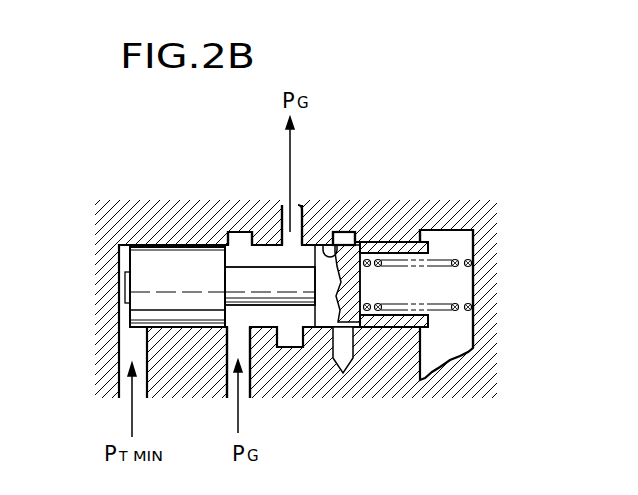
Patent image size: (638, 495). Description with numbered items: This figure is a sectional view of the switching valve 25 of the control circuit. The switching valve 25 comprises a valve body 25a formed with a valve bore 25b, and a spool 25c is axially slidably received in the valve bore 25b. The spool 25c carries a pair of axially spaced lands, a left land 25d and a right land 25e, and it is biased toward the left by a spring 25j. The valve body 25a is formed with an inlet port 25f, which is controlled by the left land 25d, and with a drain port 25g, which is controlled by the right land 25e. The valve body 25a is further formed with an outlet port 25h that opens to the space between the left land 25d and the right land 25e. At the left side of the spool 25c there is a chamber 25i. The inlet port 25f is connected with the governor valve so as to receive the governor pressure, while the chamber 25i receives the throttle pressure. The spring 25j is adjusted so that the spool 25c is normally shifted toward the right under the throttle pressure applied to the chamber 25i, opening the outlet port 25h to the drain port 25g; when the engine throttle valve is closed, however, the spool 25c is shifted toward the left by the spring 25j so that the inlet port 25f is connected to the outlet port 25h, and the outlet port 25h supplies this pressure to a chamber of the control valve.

The switching valve 25 is at (462, 163).
The valve body 25a is at (262, 240).
The valve bore 25b is at (347, 232).
The spool 25c is at (275, 290).
The left land 25d is at (145, 260).
The right land 25e is at (350, 300).
The inlet port 25f is at (237, 335).
The drain port 25g is at (343, 340).
The outlet port 25h is at (300, 203).
The chamber 25i is at (119, 308).
The spring 25j is at (473, 230).